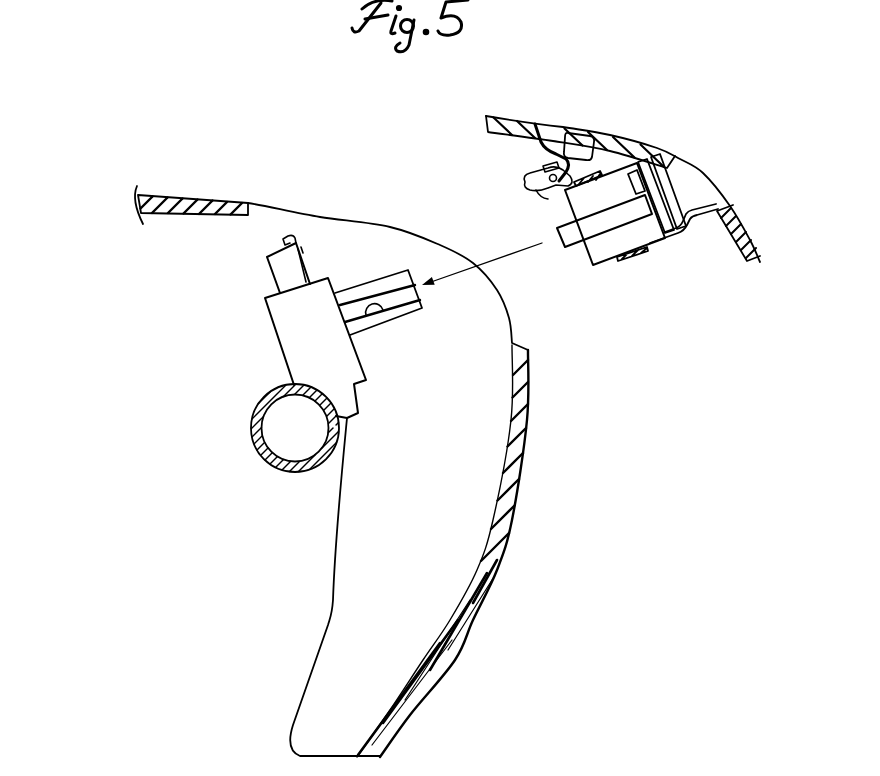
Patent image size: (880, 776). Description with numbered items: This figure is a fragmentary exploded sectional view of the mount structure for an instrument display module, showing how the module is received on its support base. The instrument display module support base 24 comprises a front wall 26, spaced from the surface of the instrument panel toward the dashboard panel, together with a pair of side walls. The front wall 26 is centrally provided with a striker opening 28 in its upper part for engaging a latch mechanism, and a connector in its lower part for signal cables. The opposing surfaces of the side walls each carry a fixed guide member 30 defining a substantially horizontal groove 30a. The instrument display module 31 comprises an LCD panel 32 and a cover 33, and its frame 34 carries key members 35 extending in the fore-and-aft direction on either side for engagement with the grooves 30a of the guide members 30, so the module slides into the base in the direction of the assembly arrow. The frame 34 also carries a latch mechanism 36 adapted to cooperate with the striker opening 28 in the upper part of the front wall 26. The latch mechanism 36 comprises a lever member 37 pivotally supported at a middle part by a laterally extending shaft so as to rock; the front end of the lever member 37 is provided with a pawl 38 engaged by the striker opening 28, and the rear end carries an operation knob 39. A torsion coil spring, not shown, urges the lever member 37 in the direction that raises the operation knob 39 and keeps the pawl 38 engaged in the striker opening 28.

The instrument display module support base 24 is at (272, 353).
The front wall 26 is at (300, 248).
The striker opening 28 is at (308, 266).
The fixed guide member 30 is at (360, 290).
The groove 30a is at (384, 312).
The instrument display module 31 is at (668, 143).
The LCD panel 32 is at (678, 205).
The cover 33 is at (777, 235).
The frame 34 is at (617, 253).
The key member 35 is at (571, 237).
The latch mechanism 36 is at (523, 186).
The lever member 37 is at (538, 174).
The pawl 38 is at (538, 192).
The operation knob 39 is at (583, 143).